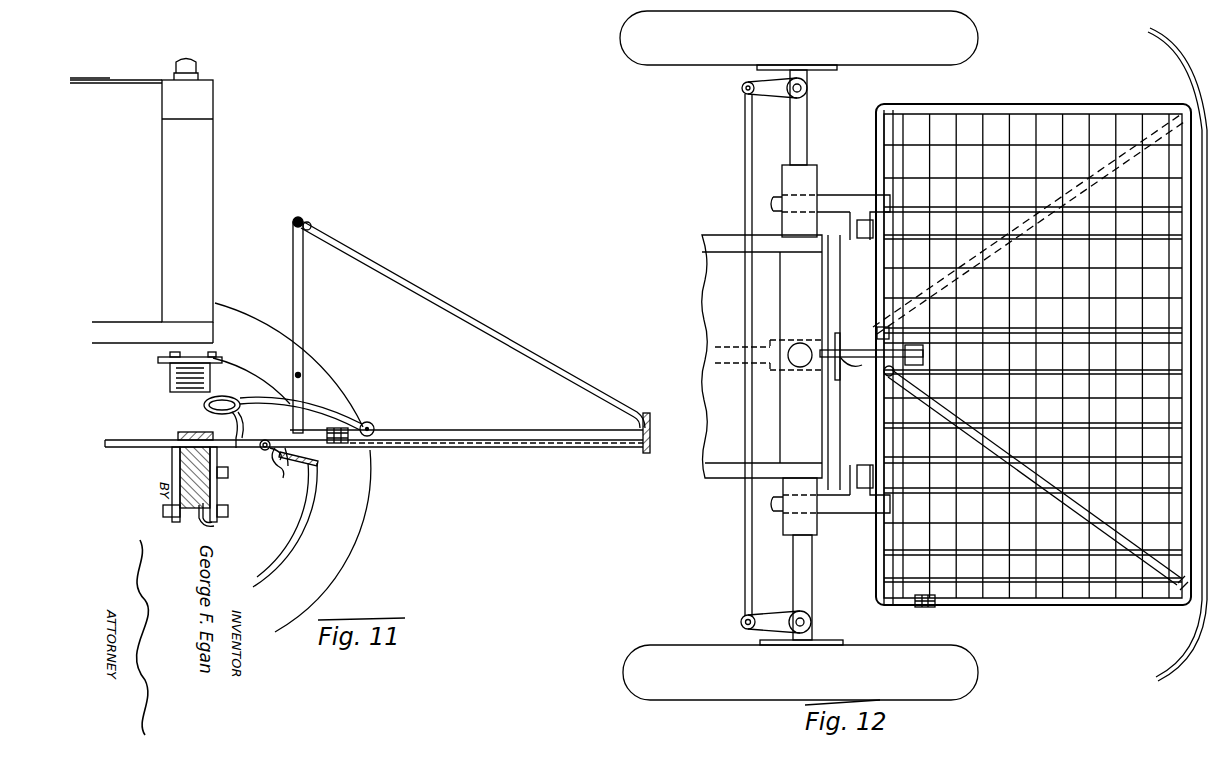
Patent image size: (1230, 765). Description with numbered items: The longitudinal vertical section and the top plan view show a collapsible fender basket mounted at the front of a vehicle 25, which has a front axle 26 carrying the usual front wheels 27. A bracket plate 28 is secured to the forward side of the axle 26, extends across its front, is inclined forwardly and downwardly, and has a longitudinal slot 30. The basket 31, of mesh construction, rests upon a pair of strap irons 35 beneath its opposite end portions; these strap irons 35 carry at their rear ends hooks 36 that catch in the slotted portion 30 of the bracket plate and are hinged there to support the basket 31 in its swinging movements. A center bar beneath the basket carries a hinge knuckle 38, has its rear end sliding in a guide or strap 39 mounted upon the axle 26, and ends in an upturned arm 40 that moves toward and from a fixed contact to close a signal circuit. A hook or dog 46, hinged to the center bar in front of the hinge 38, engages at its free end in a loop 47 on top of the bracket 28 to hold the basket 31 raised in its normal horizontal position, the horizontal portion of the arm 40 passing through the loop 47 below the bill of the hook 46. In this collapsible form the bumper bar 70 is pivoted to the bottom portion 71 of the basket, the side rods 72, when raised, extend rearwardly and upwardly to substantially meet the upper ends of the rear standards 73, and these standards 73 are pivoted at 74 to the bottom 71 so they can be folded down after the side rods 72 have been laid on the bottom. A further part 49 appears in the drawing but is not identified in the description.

In FIG. 11, the vehicle 25 is at (135, 92).
In FIG. 12, the vehicle 25 is at (712, 250).
In FIG. 11, the front axle 26 is at (206, 520).
In FIG. 12, the front axle 26 is at (801, 128).
In FIG. 11, the front wheels 27 is at (364, 501).
In FIG. 12, the front wheels 27 is at (890, 24).
In FIG. 11, the bracket plate 28 is at (300, 464).
In FIG. 12, the bracket plate 28 is at (848, 200).
In FIG. 12, the longitudinal slot 30 is at (845, 362).
In FIG. 12, the basket 31 is at (1025, 135).
In FIG. 11, the strap irons 35 is at (440, 447).
In FIG. 12, the strap irons 35 is at (1080, 228).
In FIG. 11, the hooks 36 is at (284, 480).
In FIG. 11, the hinge knuckle 38 is at (266, 452).
In FIG. 11, the guide or strap 39 is at (180, 435).
In FIG. 12, the guide or strap 39 is at (880, 327).
In FIG. 11, the upturned arm 40 is at (128, 443).
In FIG. 11, the hook or dog 46 is at (268, 405).
In FIG. 12, the hook or dog 46 is at (851, 379).
In FIG. 11, the loop 47 is at (237, 449).
In FIG. 12, the loop 47 is at (880, 346).
In FIG. 11, the loop 49 is at (225, 396).
In FIG. 11, the bumper bar 70 is at (650, 442).
In FIG. 12, the bumper bar 70 is at (1188, 98).
In FIG. 11, the bottom portion of the basket 71 is at (388, 429).
In FIG. 12, the bottom portion of the basket 71 is at (910, 610).
In FIG. 11, the side rods 72 is at (607, 393).
In FIG. 12, the side rods 72 is at (986, 110).
In FIG. 11, the rear standards 73 is at (295, 268).
In FIG. 12, the rear standards 73 is at (880, 536).
In FIG. 11, the pivot 74 is at (303, 433).